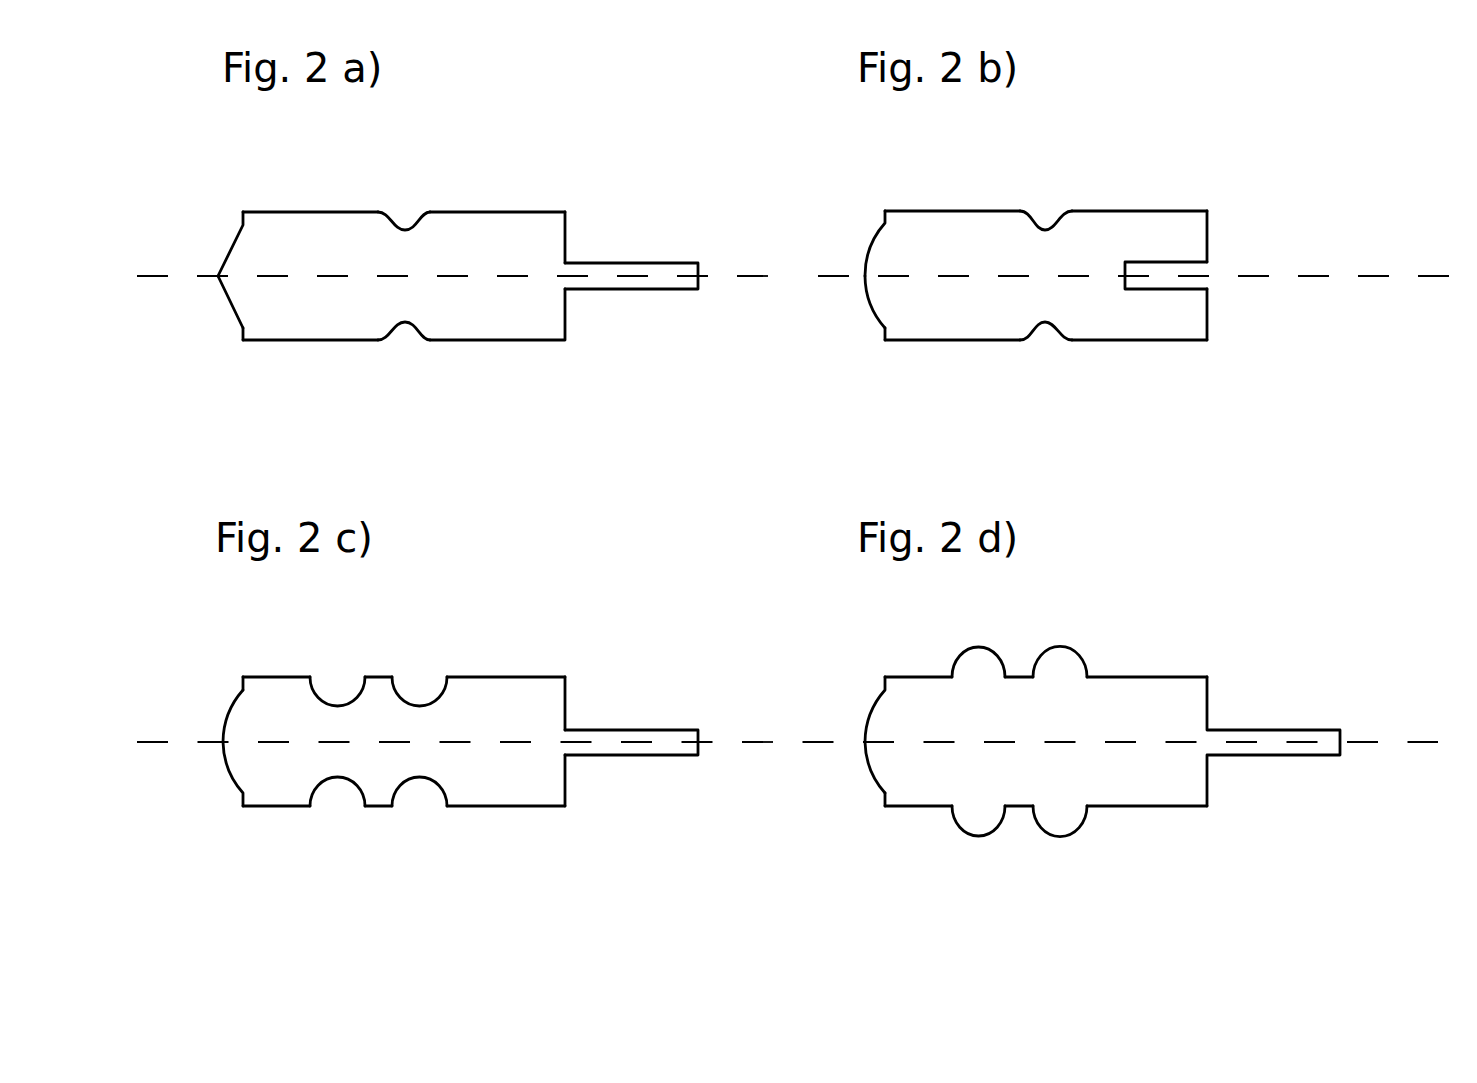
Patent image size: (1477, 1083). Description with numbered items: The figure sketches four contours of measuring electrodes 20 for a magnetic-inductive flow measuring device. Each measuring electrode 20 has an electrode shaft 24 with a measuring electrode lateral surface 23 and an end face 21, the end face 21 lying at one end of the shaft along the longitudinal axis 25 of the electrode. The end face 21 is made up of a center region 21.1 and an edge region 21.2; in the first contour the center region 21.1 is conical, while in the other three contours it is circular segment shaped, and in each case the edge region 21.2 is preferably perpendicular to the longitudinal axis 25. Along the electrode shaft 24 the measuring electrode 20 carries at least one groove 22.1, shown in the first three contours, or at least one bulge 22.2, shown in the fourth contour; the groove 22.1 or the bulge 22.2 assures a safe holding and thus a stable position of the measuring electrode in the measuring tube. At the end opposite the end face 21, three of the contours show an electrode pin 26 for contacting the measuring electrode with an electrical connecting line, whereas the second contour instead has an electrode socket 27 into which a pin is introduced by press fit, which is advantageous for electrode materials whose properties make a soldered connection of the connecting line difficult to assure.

In FIG. 2a, the measuring electrode 20 is at (565, 185).
In FIG. 2b, the measuring electrode 20 is at (1232, 237).
In FIG. 2c, the measuring electrode 20 is at (378, 833).
In FIG. 2d, the measuring electrode 20 is at (1233, 705).
In FIG. 2a, the end face 21 is at (230, 247).
In FIG. 2b, the end face 21 is at (873, 237).
In FIG. 2c, the end face 21 is at (233, 703).
In FIG. 2d, the end face 21 is at (868, 703).
In FIG. 2a, the center region 21.1 is at (230, 302).
In FIG. 2b, the center region 21.1 is at (873, 317).
In FIG. 2c, the center region 21.1 is at (232, 780).
In FIG. 2d, the center region 21.1 is at (873, 782).
In FIG. 2a, the edge region 21.2 is at (243, 340).
In FIG. 2b, the edge region 21.2 is at (883, 333).
In FIG. 2c, the edge region 21.2 is at (243, 678).
In FIG. 2d, the edge region 21.2 is at (870, 798).
In FIG. 2a, the groove 22.1 is at (407, 326).
In FIG. 2b, the groove 22.1 is at (1045, 326).
In FIG. 2c, the groove 22.1 is at (432, 677).
In FIG. 2d, the bulge 22.2 is at (1087, 662).
In FIG. 2a, the measuring electrode lateral surface 23 is at (330, 211).
In FIG. 2b, the measuring electrode lateral surface 23 is at (1127, 211).
In FIG. 2c, the measuring electrode lateral surface 23 is at (510, 807).
In FIG. 2d, the measuring electrode lateral surface 23 is at (1153, 807).
In FIG. 2a, the electrode shaft 24 is at (538, 313).
In FIG. 2b, the electrode shaft 24 is at (698, 470).
In FIG. 2c, the electrode shaft 24 is at (645, 548).
In FIG. 2d, the electrode shaft 24 is at (700, 548).
In FIG. 2b, the longitudinal axis 25 is at (1393, 288).
In FIG. 2d, the longitudinal axis 25 is at (1393, 730).
In FIG. 2c, the electrode pin 26 is at (605, 742).
In FIG. 2b, the electrode socket 27 is at (1167, 277).